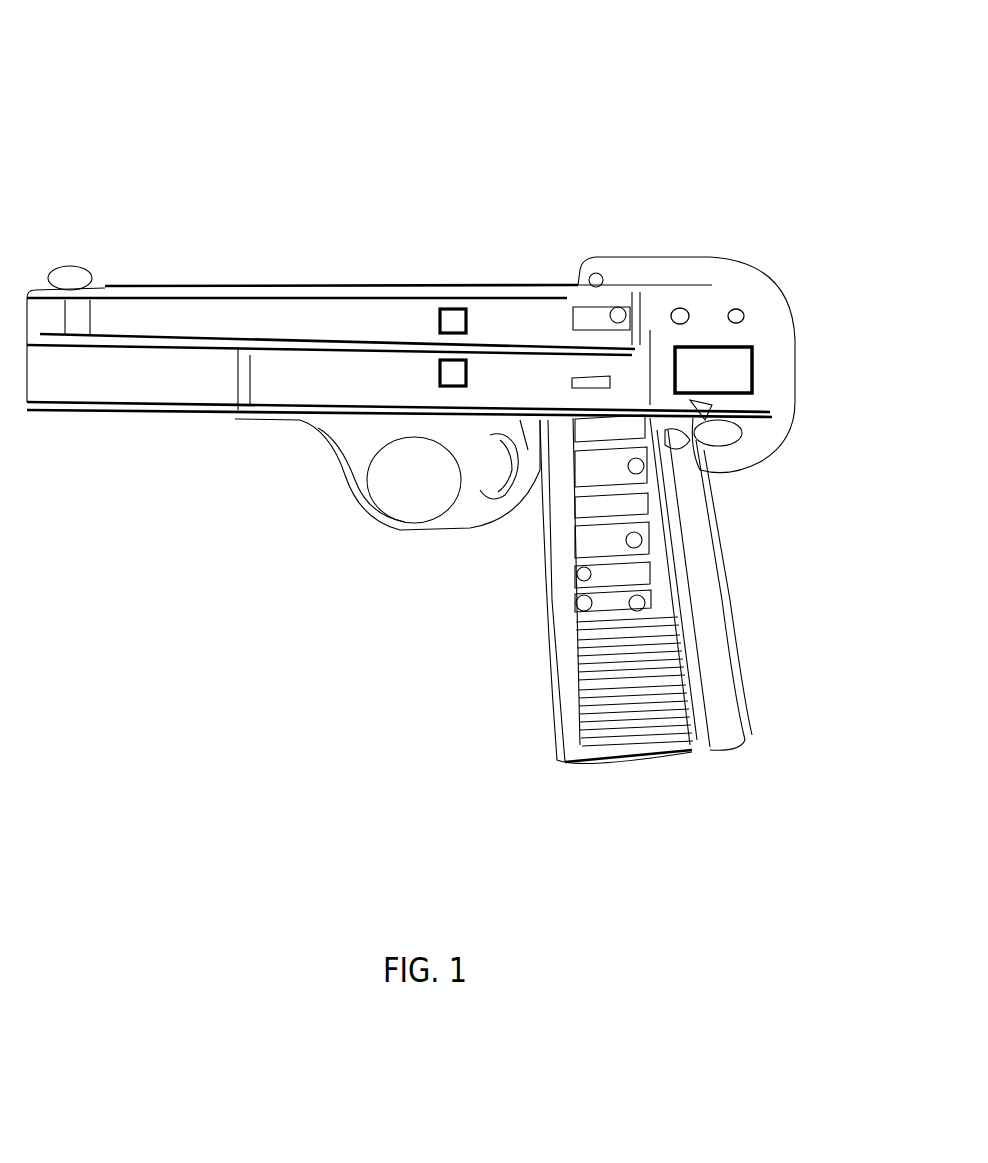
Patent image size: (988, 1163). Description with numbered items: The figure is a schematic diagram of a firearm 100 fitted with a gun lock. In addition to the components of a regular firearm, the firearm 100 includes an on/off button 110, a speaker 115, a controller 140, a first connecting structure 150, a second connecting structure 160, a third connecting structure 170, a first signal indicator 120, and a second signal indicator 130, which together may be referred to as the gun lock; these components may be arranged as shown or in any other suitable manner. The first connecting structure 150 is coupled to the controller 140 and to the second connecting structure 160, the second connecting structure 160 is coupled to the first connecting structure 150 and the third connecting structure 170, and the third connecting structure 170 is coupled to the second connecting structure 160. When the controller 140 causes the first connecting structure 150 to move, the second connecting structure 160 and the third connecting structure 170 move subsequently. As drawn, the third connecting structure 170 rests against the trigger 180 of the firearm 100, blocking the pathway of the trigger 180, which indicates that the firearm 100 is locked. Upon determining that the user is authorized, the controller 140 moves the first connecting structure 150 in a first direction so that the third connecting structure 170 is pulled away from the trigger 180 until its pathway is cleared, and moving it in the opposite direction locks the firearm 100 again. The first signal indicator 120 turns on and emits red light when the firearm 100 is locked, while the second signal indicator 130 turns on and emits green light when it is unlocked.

The firearm 100 is at (411, 510).
The on/off button 110 is at (450, 372).
The speaker 115 is at (453, 312).
The first signal indicator 120 is at (688, 315).
The second signal indicator 130 is at (745, 314).
The controller 140 is at (728, 373).
The first connecting structure 150 is at (700, 390).
The second connecting structure 160 is at (678, 450).
The third connecting structure 170 is at (547, 455).
The trigger 180 is at (485, 478).